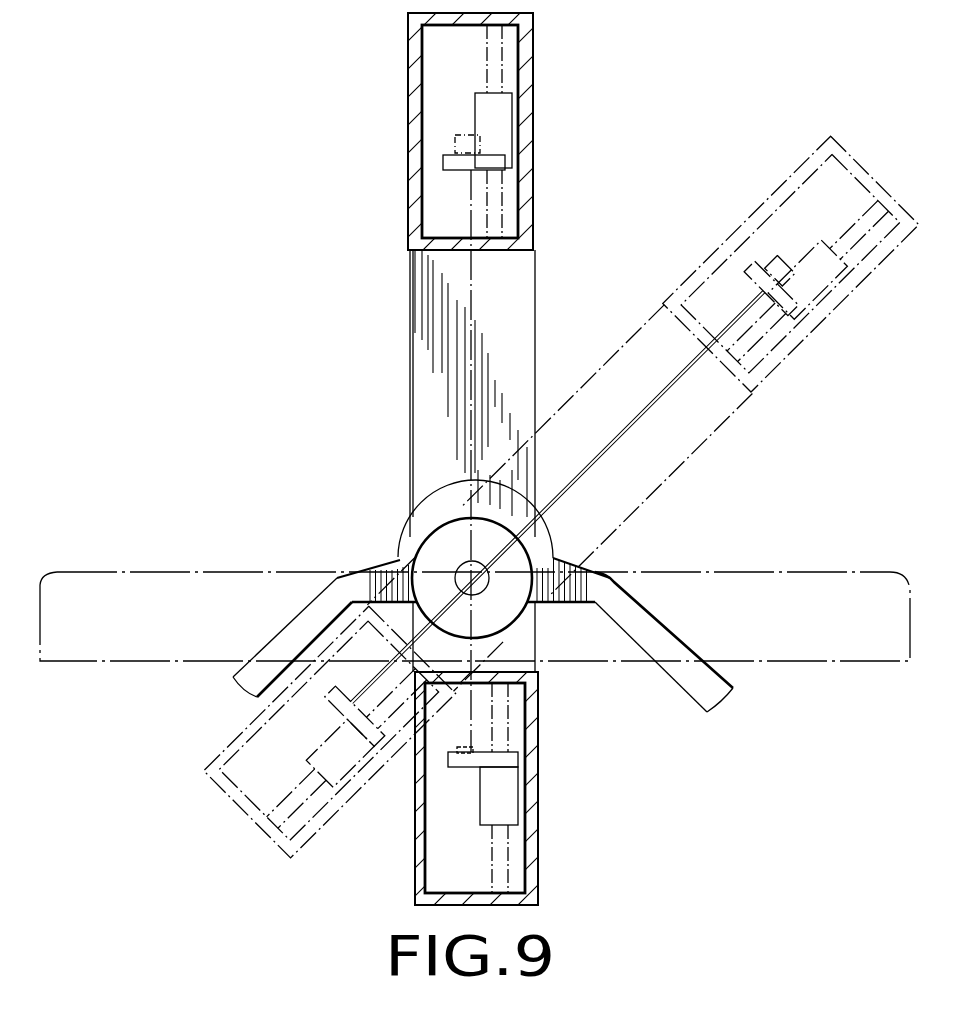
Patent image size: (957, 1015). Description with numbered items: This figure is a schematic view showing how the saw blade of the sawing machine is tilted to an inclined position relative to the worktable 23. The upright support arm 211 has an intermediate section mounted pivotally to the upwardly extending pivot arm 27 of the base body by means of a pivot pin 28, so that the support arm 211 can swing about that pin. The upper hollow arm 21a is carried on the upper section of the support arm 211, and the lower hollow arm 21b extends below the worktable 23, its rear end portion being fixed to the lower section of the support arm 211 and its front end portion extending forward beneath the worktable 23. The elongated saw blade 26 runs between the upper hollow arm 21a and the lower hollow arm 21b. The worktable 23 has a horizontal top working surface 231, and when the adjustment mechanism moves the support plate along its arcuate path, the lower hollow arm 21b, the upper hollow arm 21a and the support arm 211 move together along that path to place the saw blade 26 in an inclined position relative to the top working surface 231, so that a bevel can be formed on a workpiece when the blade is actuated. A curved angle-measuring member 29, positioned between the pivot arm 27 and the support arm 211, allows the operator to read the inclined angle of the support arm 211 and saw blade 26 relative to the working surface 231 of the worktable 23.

The upper hollow arm 21a is at (535, 162).
The upright support arm 211 is at (518, 290).
The top working surface 231 is at (230, 572).
The curved angle-measuring member 29 is at (408, 538).
The pivot pin 28 is at (456, 572).
The worktable 23 is at (745, 595).
The elongated saw blade 26 is at (470, 712).
The pivot arm 27 is at (683, 673).
The lower hollow arm 21b is at (537, 797).